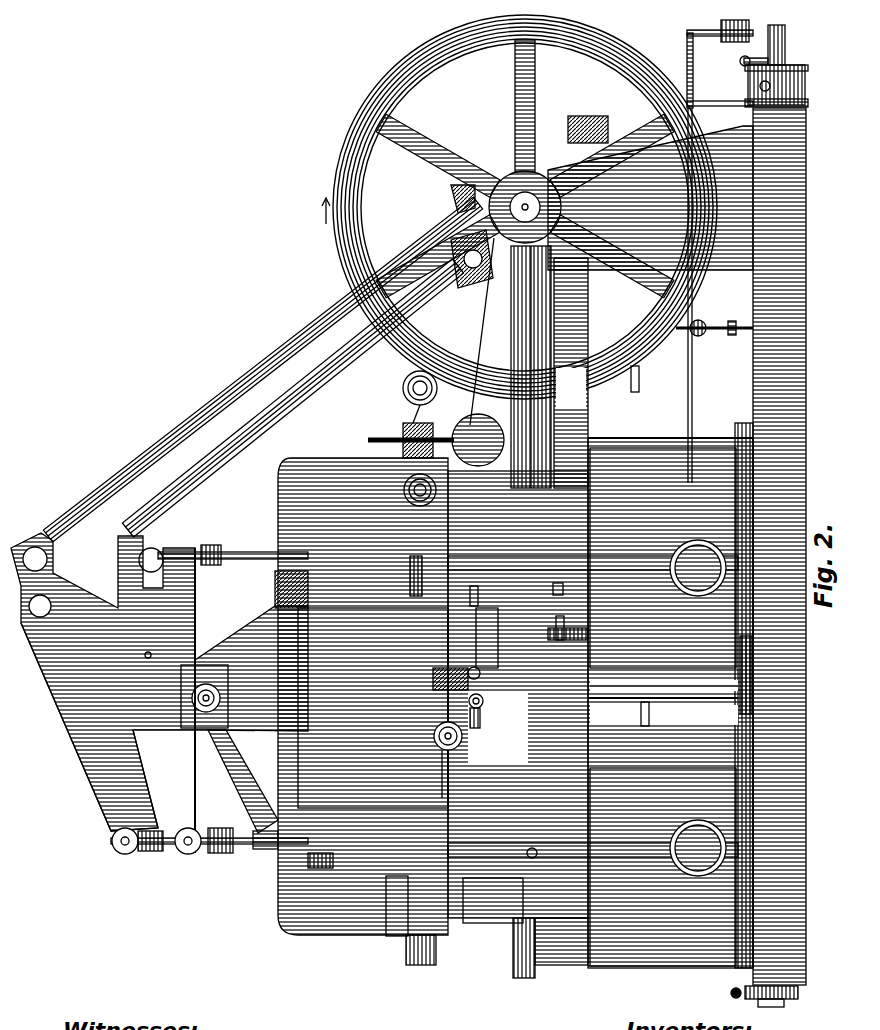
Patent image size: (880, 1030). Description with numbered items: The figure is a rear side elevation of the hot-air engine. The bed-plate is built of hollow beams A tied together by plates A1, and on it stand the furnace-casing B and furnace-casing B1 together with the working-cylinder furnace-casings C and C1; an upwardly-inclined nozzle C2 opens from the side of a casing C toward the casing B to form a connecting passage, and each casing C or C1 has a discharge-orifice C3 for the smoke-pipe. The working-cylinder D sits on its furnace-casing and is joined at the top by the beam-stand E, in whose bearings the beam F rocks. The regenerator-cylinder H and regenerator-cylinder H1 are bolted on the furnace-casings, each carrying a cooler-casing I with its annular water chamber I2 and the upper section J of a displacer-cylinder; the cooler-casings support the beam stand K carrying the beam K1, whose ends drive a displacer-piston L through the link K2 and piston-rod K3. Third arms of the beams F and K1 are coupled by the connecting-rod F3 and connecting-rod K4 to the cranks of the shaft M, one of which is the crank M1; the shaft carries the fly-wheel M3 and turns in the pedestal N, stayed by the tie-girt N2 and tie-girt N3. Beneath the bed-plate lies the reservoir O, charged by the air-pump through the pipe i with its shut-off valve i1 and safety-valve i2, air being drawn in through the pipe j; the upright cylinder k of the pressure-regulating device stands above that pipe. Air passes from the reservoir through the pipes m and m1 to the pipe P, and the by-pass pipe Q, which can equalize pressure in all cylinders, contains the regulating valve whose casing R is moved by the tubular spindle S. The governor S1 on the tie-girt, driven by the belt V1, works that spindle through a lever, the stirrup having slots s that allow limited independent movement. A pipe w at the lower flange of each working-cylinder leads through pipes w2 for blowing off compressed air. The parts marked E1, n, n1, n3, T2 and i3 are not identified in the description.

The hollow beams A is at (762, 395).
The plates A1 is at (745, 615).
The furnace-casing B is at (561, 934).
The furnace-casing B1 is at (650, 535).
The working-cylinder furnace-casing C is at (663, 867).
The working-cylinder furnace-casing C1 is at (670, 703).
The upwardly-inclined tube or nozzle C2 is at (696, 568).
The discharge-orifice C3 is at (694, 848).
The working-cylinder D is at (593, 694).
The beam-stand E is at (373, 708).
The rod E1 is at (174, 540).
The beam F is at (319, 865).
The connecting-rod F3 is at (248, 428).
The regenerator-cylinder H is at (499, 928).
The regenerator-cylinder H1 is at (487, 638).
The cooler-casing I is at (363, 696).
The annular chamber I2 is at (397, 906).
The upper section of displacer-cylinder J is at (412, 957).
The beam stand K is at (236, 615).
The beam K1 is at (86, 725).
The link or connecting-rod K2 is at (156, 687).
The piston-rod K3 is at (209, 686).
The connecting-rod K4 is at (222, 392).
The upright cylinder k is at (156, 649).
The displacer-piston L is at (420, 576).
The shaft M is at (525, 169).
The crank M1 is at (514, 187).
The fly-wheel M3 is at (343, 118).
The pedestal N is at (650, 198).
The tie-girt N2 is at (523, 367).
The tie-girt N3 is at (580, 278).
The pipe n is at (680, 395).
The pipe branch n1 is at (477, 596).
The pipe union n3 is at (735, 25).
The reservoir O is at (776, 86).
The pipe P is at (465, 760).
The by-pass pipe Q is at (473, 709).
The valve casing R is at (446, 679).
The tubular spindle S is at (481, 670).
The governor S1 is at (436, 439).
The governor T2 is at (390, 432).
The belt V1 is at (472, 345).
The pipe i is at (728, 322).
The shut-off valve i1 is at (714, 326).
The safety-valve i2 is at (635, 349).
The bracket i3 is at (605, 115).
The pipe j is at (762, 45).
The pipe m is at (663, 689).
The pipe m1 is at (483, 716).
The slots s is at (560, 583).
The pipe w is at (592, 741).
The pipes w2 is at (756, 675).